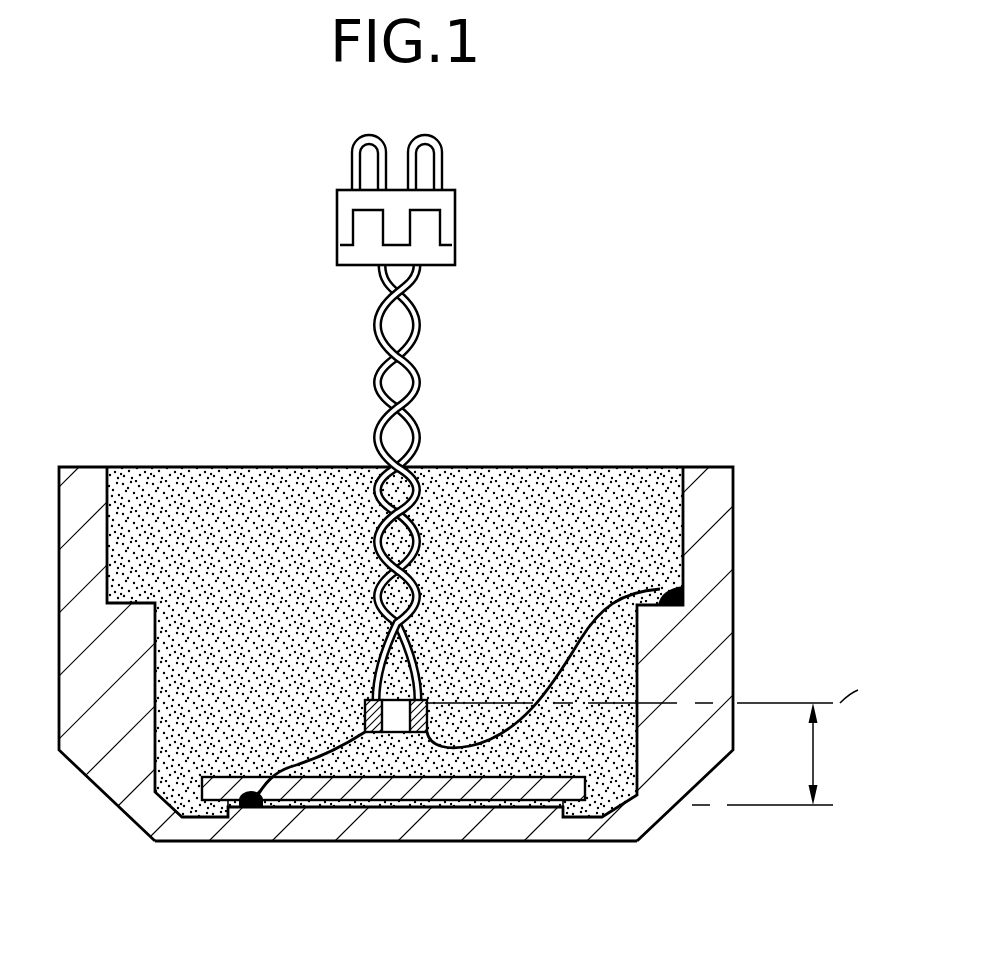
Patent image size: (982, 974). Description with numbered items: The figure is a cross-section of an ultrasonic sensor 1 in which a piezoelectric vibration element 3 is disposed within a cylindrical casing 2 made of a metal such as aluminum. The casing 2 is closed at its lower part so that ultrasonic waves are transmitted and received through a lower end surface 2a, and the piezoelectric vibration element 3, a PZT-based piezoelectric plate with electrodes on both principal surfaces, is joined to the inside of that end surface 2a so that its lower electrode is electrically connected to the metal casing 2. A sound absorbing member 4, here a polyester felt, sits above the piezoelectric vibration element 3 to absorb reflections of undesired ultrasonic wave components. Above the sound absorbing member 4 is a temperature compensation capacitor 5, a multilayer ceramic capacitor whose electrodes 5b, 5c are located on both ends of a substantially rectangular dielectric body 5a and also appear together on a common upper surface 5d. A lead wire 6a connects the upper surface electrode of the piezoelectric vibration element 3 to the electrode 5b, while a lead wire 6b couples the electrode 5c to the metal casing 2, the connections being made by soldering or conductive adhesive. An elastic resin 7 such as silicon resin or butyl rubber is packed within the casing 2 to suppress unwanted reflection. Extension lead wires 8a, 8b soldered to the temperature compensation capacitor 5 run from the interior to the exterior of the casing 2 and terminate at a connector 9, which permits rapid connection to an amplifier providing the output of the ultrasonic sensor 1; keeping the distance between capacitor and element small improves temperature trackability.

The ultrasonic sensor 1 is at (120, 233).
The cylindrical casing 2 is at (733, 655).
The lower end surface 2a is at (575, 841).
The piezoelectric vibration element 3 is at (478, 800).
The sound absorbing member 4 is at (212, 781).
The temperature compensation capacitor 5 is at (374, 746).
The dielectric body 5a is at (395, 722).
The electrode 5b is at (363, 700).
The electrode 5c is at (430, 703).
The upper surface 5d is at (422, 700).
The lead wire 6a is at (292, 767).
The lead wire 6b is at (650, 590).
The elastic resin 7 is at (627, 492).
The extension lead wire 8a is at (367, 329).
The extension lead wire 8b is at (425, 329).
The connector 9 is at (457, 207).